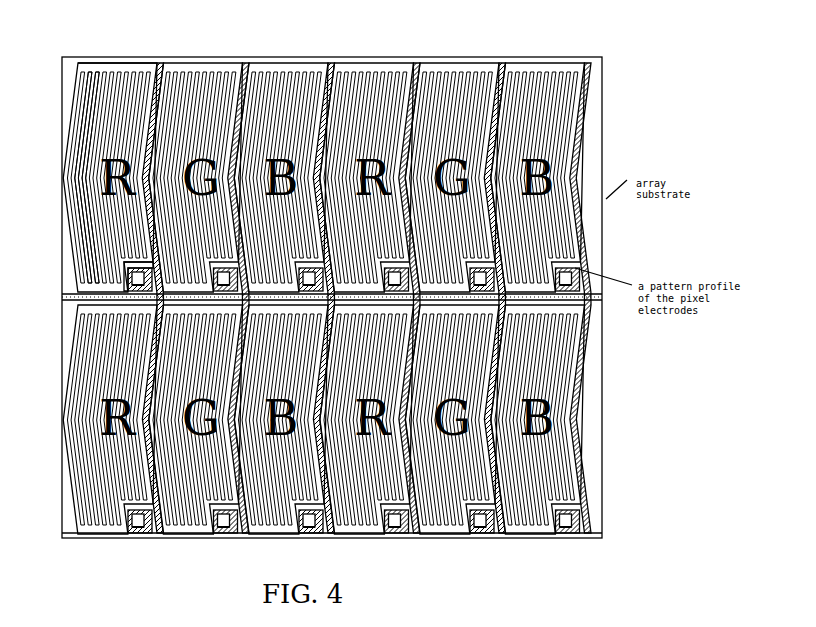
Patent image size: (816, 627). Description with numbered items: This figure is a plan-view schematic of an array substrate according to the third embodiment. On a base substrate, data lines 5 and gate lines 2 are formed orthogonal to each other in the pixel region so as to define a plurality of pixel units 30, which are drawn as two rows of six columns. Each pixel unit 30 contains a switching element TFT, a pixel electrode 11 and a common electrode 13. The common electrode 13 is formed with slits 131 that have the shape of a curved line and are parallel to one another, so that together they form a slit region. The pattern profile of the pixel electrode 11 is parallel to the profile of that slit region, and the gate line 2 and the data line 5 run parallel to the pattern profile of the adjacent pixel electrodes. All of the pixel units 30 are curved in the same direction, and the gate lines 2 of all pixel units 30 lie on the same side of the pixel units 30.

The gate line 2 is at (78, 294).
The data line 5 is at (122, 265).
The pixel electrode 11 is at (80, 224).
The common electrode 13 is at (66, 170).
The slit 131 is at (82, 200).
The pixel unit 30 is at (80, 67).
The switching element TFT is at (115, 297).